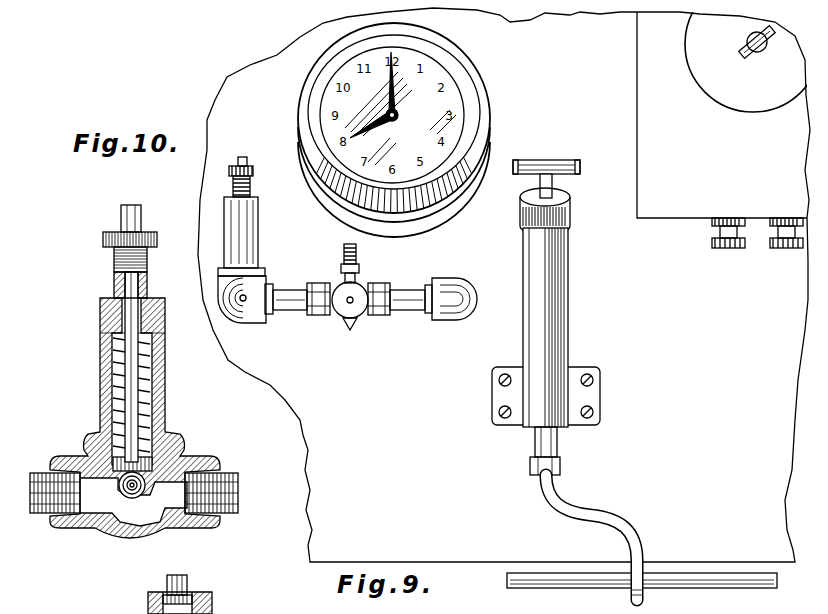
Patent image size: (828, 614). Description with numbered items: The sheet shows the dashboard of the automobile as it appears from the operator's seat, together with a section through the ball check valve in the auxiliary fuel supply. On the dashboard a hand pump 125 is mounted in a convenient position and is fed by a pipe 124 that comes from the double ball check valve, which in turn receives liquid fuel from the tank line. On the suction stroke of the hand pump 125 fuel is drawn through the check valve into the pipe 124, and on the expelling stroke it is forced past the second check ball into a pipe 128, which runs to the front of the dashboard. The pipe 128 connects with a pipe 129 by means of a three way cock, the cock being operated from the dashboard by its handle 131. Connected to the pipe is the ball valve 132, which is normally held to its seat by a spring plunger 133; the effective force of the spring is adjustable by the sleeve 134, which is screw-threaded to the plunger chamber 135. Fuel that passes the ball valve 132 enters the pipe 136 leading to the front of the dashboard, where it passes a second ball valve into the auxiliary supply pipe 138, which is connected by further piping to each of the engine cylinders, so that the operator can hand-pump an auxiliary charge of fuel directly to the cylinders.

In FIG. 9, the pipe 124 is at (603, 537).
In FIG. 9, the hand pump 125 is at (570, 318).
In FIG. 9, the pipe 128 is at (414, 288).
In FIG. 9, the pipe 129 is at (287, 288).
In FIG. 10, the pipe 129 is at (229, 478).
In FIG. 9, the handle 131 is at (357, 254).
In FIG. 10, the ball valve 132 is at (100, 462).
In FIG. 10, the spring plunger 133 is at (100, 360).
In FIG. 9, the sleeve 134 is at (250, 187).
In FIG. 10, the sleeve 134 is at (114, 281).
In FIG. 9, the plunger chamber 135 is at (258, 212).
In FIG. 10, the plunger chamber 135 is at (162, 366).
In FIG. 10, the pipe 136 is at (40, 512).
In FIG. 10, the auxiliary supply pipe 138 is at (188, 580).